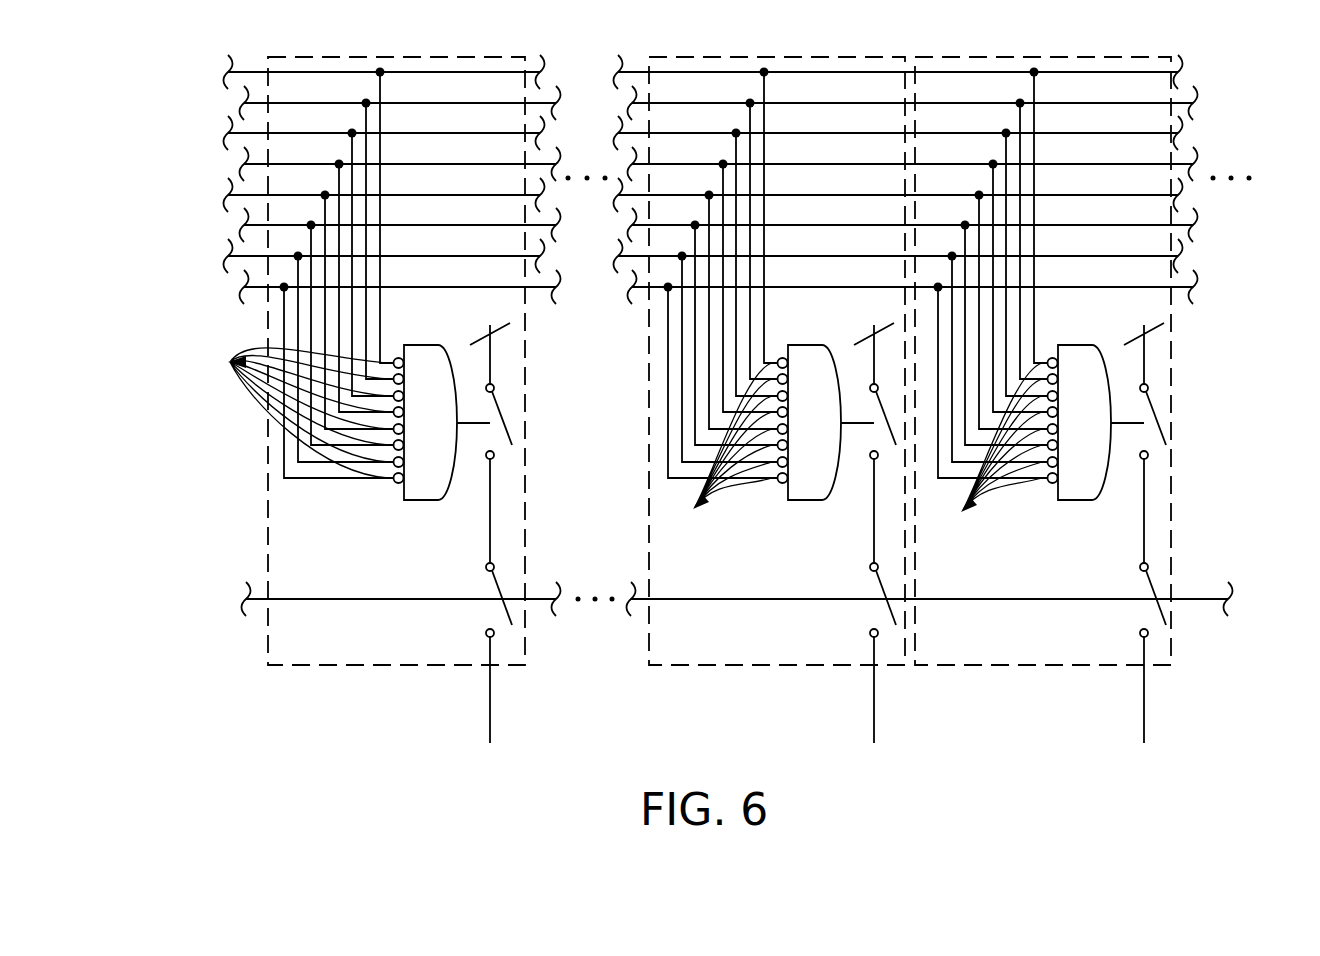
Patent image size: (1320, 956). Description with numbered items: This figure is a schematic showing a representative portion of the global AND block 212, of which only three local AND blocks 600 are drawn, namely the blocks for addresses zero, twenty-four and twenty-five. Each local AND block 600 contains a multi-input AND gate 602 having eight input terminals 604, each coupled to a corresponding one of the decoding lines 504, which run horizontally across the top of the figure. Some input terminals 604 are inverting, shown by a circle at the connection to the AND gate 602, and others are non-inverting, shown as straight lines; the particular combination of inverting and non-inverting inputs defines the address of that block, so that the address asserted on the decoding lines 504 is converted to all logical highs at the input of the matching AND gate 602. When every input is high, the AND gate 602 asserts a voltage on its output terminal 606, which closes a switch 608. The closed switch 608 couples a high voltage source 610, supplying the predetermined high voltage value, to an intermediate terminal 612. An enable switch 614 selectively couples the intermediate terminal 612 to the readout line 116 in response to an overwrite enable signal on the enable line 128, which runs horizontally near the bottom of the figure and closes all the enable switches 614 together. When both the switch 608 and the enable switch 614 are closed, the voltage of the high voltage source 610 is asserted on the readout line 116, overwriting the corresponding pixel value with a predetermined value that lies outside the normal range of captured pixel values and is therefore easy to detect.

The decoding lines 504 is at (199, 303).
The local AND block 600 is at (363, 665).
The multi-input AND gate 602 is at (428, 500).
The input terminals 604 is at (616, 304).
The output terminal 606 is at (482, 428).
The switch 608 is at (497, 403).
The high voltage source 610 is at (510, 327).
The intermediate terminal 612 is at (490, 546).
The enable switch 614 is at (504, 612).
The readout line 116 is at (490, 701).
The enable line 128 is at (1208, 598).
The global AND block 212 is at (267, 711).